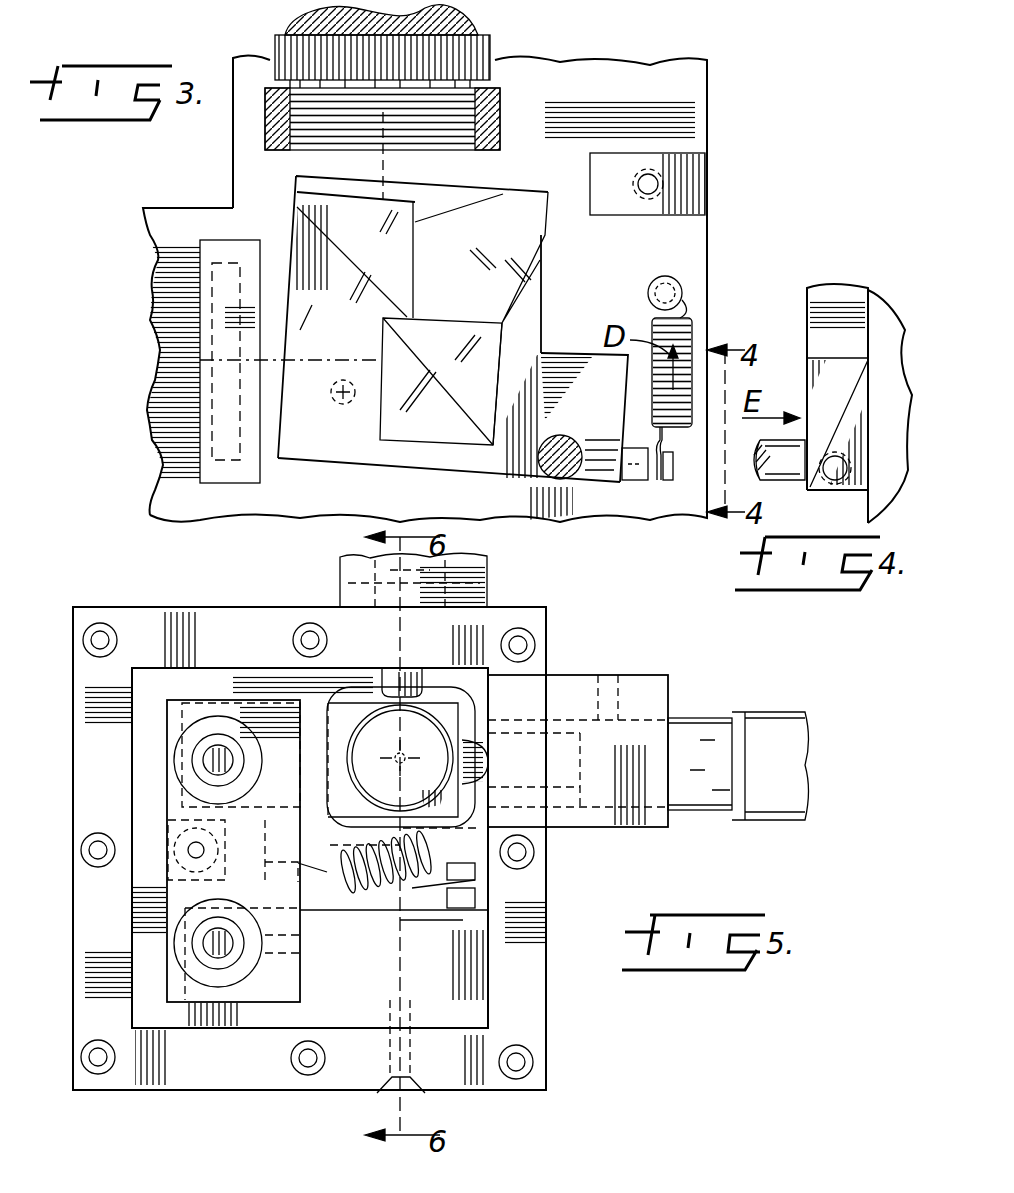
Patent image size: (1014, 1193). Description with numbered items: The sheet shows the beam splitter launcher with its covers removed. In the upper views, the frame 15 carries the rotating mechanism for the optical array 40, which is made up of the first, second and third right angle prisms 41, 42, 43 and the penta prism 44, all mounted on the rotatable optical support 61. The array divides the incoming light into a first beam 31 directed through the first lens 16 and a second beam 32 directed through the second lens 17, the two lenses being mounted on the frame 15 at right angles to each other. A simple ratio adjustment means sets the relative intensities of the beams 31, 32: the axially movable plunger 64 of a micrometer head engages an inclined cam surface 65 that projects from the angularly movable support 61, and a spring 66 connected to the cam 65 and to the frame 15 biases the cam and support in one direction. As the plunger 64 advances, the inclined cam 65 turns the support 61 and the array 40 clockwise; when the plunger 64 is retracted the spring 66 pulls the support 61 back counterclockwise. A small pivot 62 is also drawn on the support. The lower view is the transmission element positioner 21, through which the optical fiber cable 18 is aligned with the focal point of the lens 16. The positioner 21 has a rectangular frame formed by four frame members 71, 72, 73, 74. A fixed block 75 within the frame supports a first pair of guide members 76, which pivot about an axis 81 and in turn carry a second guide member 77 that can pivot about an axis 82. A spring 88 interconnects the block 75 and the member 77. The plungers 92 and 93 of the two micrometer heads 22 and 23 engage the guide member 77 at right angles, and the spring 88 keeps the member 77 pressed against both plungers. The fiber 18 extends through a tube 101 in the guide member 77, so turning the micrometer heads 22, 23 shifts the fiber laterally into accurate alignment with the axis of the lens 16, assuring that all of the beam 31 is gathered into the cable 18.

In FIG. 3, the frame 15 is at (695, 92).
In FIG. 4, the frame 15 is at (890, 332).
In FIG. 3, the first lens 16 is at (150, 442).
In FIG. 3, the second lens 17 is at (493, 42).
In FIG. 5, the optical fiber cable 18 is at (400, 758).
In FIG. 5, the transmission element positioner 21 is at (565, 850).
In FIG. 5, the coordinate position adjustment member 22 is at (690, 718).
In FIG. 5, the coordinate position adjustment member 23 is at (495, 570).
In FIG. 3, the first beam 31 is at (335, 347).
In FIG. 3, the second beam 32 is at (390, 176).
In FIG. 3, the optical array 40 is at (540, 294).
In FIG. 3, the first right angle prism 41 is at (375, 423).
In FIG. 3, the second right angle prism 42 is at (368, 272).
In FIG. 3, the third right angle prism 43 is at (500, 350).
In FIG. 3, the penta prism 44 is at (470, 215).
In FIG. 3, the rotatable optical support 61 is at (450, 468).
In FIG. 3, the pivot pin 62 is at (338, 400).
In FIG. 3, the plunger 64 is at (572, 477).
In FIG. 4, the plunger 64 is at (790, 477).
In FIG. 3, the inclined cam surface 65 is at (583, 372).
In FIG. 4, the inclined cam surface 65 is at (848, 395).
In FIG. 3, the spring 66 is at (700, 325).
In FIG. 5, the frame member 71 is at (540, 992).
In FIG. 5, the frame member 72 is at (222, 608).
In FIG. 5, the frame member 73 is at (80, 897).
In FIG. 5, the frame member 74 is at (210, 1085).
In FIG. 5, the fixed block 75 is at (442, 996).
In FIG. 5, the first pair of guide members 76 is at (300, 972).
In FIG. 5, the second guide member 77 is at (458, 802).
In FIG. 5, the axis 81 is at (205, 948).
In FIG. 5, the axis 82 is at (212, 762).
In FIG. 5, the spring 88 is at (350, 875).
In FIG. 5, the plunger 92 is at (485, 758).
In FIG. 5, the plunger 93 is at (392, 680).
In FIG. 5, the tube 101 is at (410, 718).